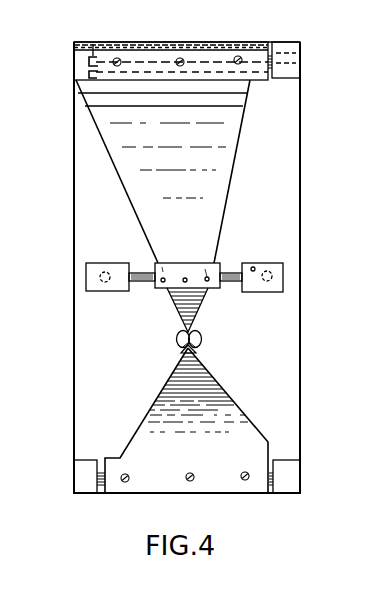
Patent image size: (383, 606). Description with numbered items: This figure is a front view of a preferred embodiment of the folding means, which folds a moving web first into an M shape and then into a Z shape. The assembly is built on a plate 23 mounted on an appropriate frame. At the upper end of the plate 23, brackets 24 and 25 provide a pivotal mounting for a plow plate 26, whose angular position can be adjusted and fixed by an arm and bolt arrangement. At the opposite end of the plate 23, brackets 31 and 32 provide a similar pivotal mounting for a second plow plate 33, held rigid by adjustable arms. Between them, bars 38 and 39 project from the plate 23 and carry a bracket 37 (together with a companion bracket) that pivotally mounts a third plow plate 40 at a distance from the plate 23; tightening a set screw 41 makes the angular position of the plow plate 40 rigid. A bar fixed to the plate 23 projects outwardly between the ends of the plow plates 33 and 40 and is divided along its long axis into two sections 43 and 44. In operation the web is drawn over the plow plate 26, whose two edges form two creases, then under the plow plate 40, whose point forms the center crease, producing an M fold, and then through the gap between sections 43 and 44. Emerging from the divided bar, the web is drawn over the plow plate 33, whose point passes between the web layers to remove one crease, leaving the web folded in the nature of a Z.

The plate 23 is at (290, 173).
The bracket 24 is at (292, 42).
The bracket 25 is at (84, 69).
The plow plate 26 is at (236, 166).
The bracket 31 is at (87, 483).
The bracket 32 is at (298, 482).
The plow plate 33 is at (230, 415).
The bracket 37 is at (110, 292).
The bar 38 is at (270, 271).
The bar 39 is at (105, 271).
The plow plate 40 is at (174, 305).
The set screw 41 is at (253, 267).
The section of bar 43 is at (201, 339).
The section of bar 44 is at (176, 339).